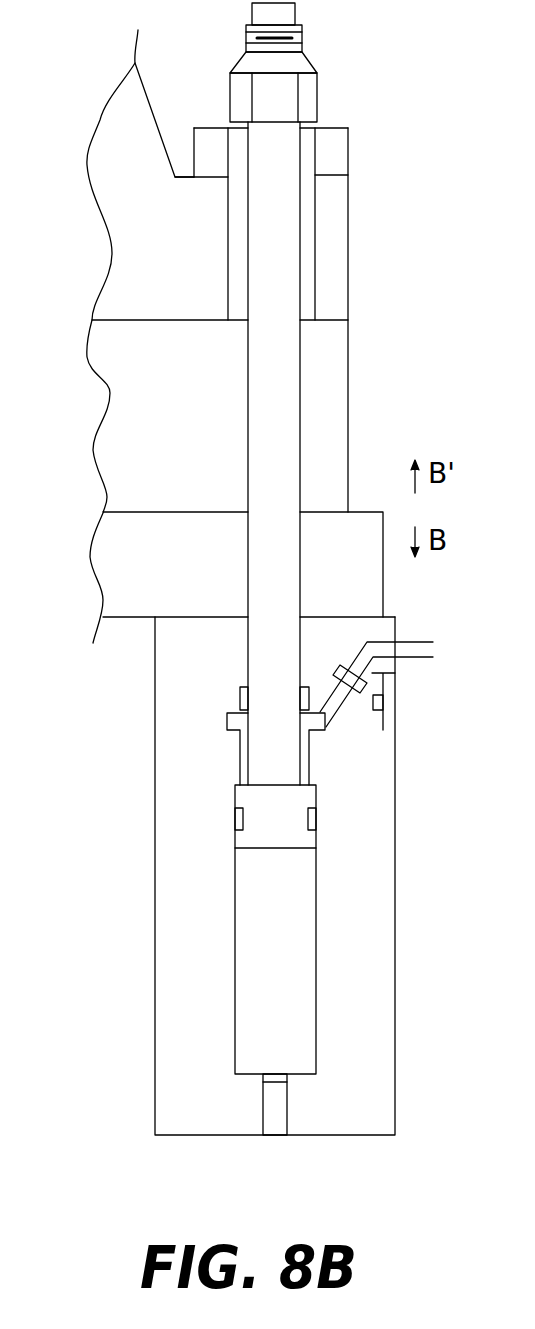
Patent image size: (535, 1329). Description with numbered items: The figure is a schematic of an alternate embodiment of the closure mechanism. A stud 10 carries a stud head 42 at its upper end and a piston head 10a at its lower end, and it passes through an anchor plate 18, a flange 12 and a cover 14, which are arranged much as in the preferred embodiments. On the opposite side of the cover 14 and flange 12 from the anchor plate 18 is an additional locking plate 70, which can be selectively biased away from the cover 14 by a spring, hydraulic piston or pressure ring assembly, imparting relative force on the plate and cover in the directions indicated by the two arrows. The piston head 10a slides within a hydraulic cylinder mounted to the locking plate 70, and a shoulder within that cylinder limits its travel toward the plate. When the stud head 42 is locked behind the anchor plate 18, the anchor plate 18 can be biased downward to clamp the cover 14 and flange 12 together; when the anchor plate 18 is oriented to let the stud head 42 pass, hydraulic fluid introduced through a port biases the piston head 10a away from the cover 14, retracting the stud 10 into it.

The stud 10 is at (287, 422).
The piston head 10a is at (235, 836).
The flange 12 is at (343, 282).
The cover 14 is at (180, 431).
The anchor plate 18 is at (348, 128).
The stud head 42 is at (303, 43).
The locking plate 70 is at (127, 565).